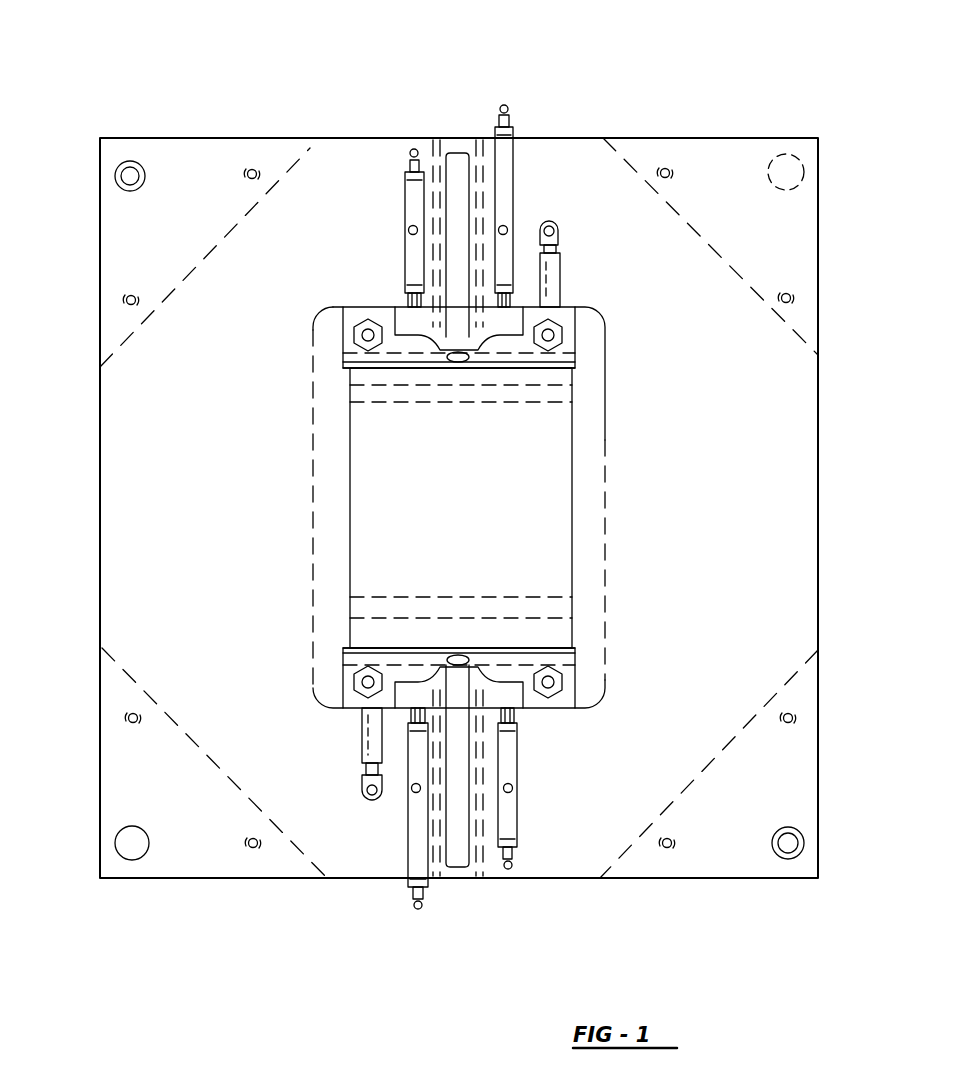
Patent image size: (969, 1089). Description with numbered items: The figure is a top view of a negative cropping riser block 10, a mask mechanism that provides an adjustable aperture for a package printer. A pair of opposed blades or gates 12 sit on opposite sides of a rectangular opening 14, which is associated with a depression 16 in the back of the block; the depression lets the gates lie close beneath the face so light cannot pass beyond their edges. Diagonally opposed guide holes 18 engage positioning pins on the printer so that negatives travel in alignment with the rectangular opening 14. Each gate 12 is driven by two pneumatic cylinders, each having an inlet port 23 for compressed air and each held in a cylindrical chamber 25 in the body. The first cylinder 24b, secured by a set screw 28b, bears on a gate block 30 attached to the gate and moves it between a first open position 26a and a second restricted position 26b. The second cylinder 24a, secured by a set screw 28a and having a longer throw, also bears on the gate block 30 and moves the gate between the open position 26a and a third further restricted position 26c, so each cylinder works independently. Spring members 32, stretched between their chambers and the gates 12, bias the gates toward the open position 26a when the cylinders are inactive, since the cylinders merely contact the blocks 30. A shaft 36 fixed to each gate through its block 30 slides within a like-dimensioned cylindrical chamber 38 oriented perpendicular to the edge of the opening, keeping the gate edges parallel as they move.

The negative cropping riser block 10 is at (200, 118).
The gates 12 is at (412, 343).
The rectangular opening 14 is at (468, 502).
The depression 16 is at (335, 480).
The guide holes 18 is at (118, 168).
The inlet port 23 is at (403, 160).
The second pneumatic cylinder 24a is at (510, 130).
The first pneumatic cylinder 24b is at (408, 210).
The cylindrical chamber 25 is at (418, 145).
The first open position 26a is at (583, 360).
The second restricted position 26b is at (575, 385).
The third further restricted position 26c is at (573, 402).
The set screw 28a is at (512, 230).
The set screw 28b is at (405, 230).
The gate block 30 is at (494, 325).
The spring members 32 is at (555, 285).
The shaft 36 is at (464, 150).
The cylindrical chamber 38 is at (450, 150).